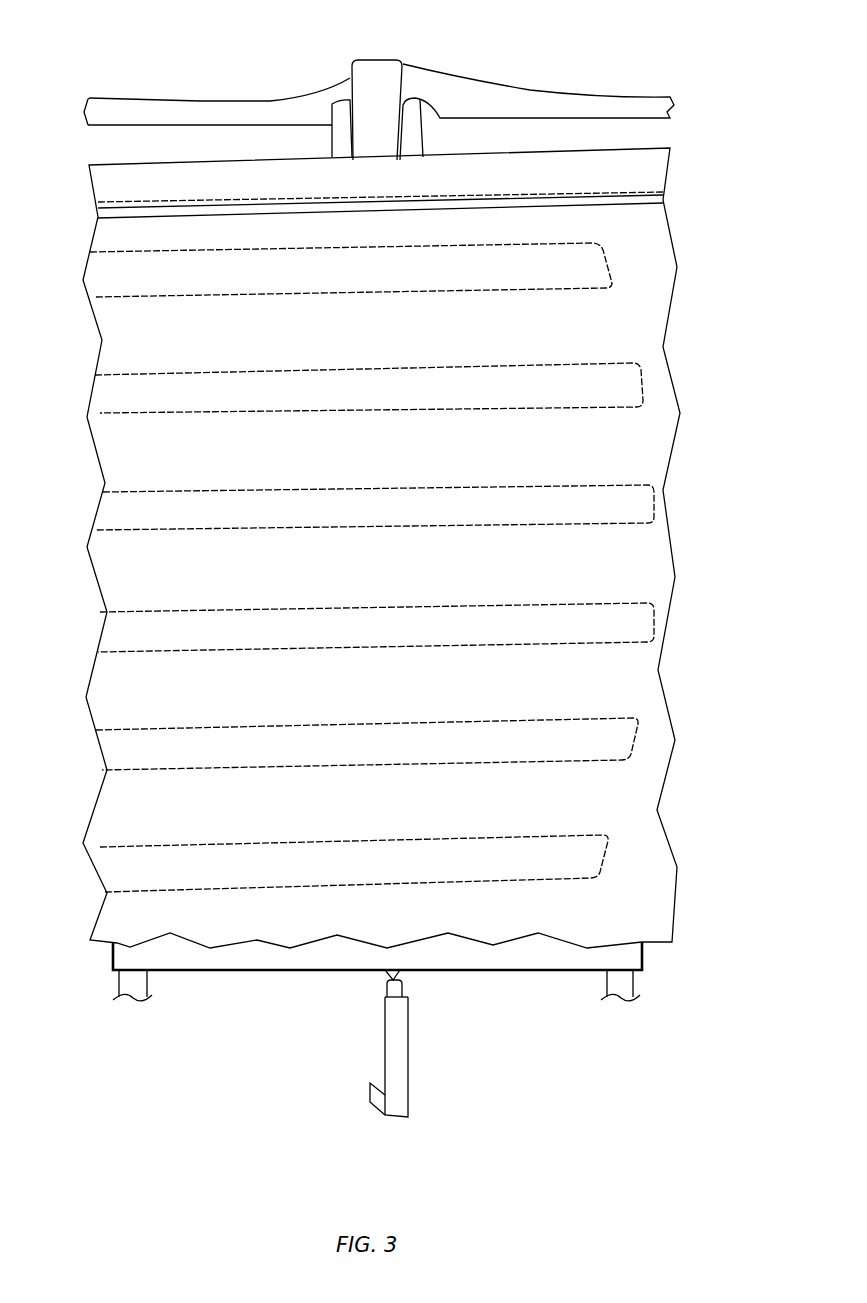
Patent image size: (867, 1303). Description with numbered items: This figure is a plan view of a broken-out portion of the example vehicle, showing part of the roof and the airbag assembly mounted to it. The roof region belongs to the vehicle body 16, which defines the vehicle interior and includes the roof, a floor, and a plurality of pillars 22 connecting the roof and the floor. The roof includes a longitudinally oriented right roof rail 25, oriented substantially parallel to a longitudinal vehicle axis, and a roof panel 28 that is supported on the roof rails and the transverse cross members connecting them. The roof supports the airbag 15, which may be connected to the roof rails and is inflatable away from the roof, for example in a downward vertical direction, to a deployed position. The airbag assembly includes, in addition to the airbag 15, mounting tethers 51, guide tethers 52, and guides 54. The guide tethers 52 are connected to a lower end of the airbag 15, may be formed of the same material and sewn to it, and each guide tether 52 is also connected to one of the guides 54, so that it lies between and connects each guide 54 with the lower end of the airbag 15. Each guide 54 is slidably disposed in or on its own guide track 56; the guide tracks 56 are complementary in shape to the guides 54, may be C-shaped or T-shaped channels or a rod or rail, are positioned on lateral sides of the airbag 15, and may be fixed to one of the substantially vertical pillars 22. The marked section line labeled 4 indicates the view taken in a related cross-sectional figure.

The vehicle body 16 is at (195, 99).
The pillars 22 is at (390, 58).
The right roof rail 25 is at (545, 148).
The roof panel 28 is at (655, 437).
The section line 4- 4 is at (380, 112).
The airbag 15 is at (520, 972).
The mounting tethers 51 is at (118, 990).
The guide tethers 52 is at (400, 975).
The guides 54 is at (385, 995).
The guide tracks 56 is at (408, 1055).